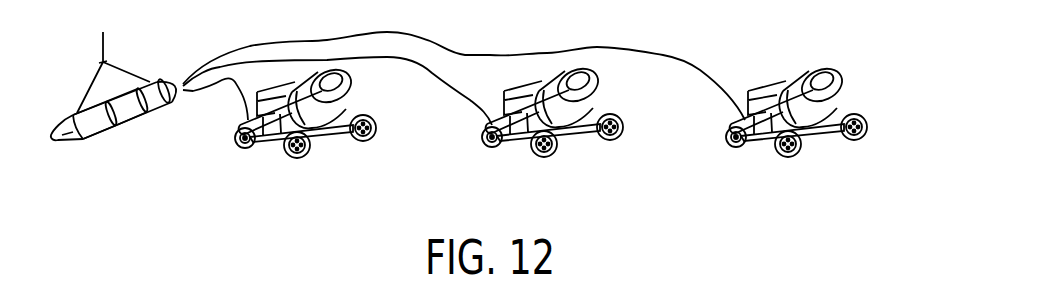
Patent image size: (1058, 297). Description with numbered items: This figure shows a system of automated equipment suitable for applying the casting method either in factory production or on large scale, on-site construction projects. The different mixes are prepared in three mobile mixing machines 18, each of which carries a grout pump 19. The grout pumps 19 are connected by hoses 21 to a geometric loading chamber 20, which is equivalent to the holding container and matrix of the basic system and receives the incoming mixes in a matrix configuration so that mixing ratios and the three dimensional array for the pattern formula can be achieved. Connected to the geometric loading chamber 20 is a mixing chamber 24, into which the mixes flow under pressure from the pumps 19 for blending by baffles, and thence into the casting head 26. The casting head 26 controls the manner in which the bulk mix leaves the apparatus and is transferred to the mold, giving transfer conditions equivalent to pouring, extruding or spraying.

The mobile mixing machine 18 is at (364, 107).
The grout pump 19 is at (238, 148).
The geometric loading chamber 20 is at (125, 110).
The hose 21 is at (232, 80).
The mixing chamber 24 is at (128, 117).
The casting head 26 is at (92, 137).